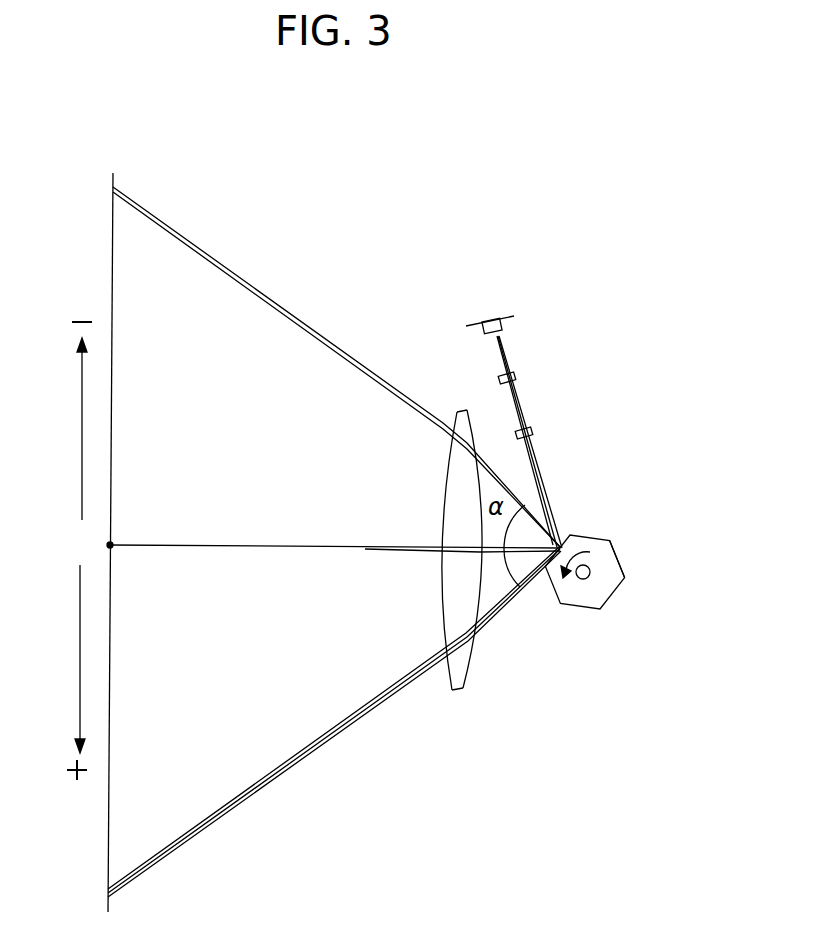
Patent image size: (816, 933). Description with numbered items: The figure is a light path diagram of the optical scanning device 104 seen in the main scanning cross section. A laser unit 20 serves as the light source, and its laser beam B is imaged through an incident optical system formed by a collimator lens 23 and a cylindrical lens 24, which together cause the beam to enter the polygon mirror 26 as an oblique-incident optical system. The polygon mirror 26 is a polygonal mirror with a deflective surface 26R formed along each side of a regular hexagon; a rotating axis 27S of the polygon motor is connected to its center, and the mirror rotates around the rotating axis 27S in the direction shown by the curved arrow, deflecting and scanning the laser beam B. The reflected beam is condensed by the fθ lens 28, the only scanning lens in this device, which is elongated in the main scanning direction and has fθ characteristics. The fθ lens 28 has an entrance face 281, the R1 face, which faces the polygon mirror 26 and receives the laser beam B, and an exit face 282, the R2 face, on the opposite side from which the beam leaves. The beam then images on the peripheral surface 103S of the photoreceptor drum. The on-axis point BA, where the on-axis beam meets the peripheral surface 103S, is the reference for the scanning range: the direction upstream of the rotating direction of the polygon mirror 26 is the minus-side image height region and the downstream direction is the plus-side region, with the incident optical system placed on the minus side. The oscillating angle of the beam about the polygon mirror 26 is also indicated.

The optical scanning device 104 is at (327, 176).
The peripheral surface 103S is at (109, 775).
The on-axis point BA is at (112, 544).
The laser beam B is at (305, 534).
The laser unit 20 is at (510, 323).
The collimator lens 23 is at (518, 378).
The cylindrical lens 24 is at (533, 433).
The polygon mirror 26 is at (595, 530).
The deflective surface 26R is at (621, 560).
The rotating axis 27S is at (590, 575).
The fθ lens 28 is at (460, 583).
The entrance face 281 is at (480, 598).
The exit face 282 is at (443, 598).